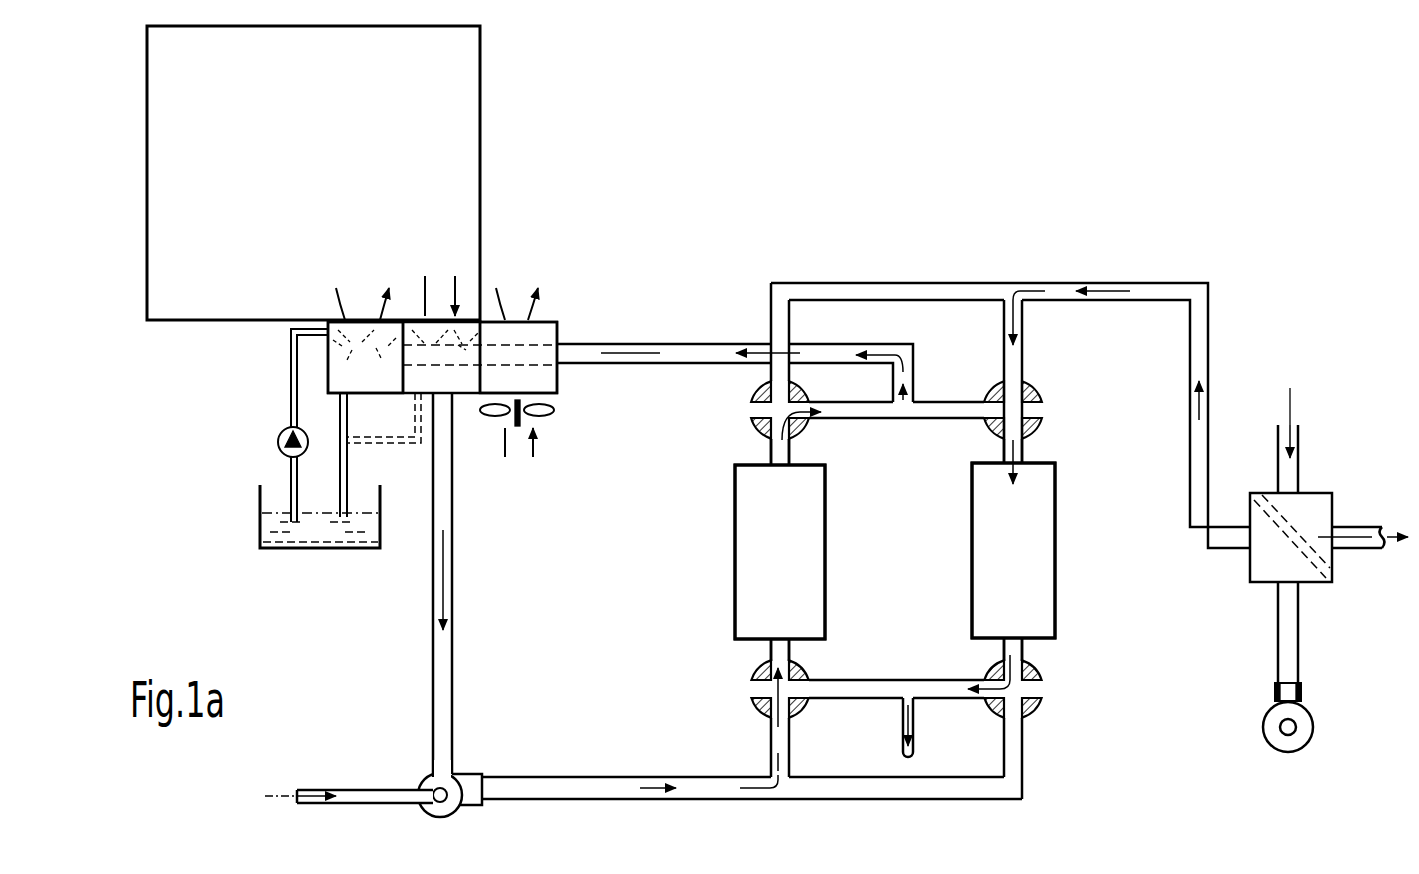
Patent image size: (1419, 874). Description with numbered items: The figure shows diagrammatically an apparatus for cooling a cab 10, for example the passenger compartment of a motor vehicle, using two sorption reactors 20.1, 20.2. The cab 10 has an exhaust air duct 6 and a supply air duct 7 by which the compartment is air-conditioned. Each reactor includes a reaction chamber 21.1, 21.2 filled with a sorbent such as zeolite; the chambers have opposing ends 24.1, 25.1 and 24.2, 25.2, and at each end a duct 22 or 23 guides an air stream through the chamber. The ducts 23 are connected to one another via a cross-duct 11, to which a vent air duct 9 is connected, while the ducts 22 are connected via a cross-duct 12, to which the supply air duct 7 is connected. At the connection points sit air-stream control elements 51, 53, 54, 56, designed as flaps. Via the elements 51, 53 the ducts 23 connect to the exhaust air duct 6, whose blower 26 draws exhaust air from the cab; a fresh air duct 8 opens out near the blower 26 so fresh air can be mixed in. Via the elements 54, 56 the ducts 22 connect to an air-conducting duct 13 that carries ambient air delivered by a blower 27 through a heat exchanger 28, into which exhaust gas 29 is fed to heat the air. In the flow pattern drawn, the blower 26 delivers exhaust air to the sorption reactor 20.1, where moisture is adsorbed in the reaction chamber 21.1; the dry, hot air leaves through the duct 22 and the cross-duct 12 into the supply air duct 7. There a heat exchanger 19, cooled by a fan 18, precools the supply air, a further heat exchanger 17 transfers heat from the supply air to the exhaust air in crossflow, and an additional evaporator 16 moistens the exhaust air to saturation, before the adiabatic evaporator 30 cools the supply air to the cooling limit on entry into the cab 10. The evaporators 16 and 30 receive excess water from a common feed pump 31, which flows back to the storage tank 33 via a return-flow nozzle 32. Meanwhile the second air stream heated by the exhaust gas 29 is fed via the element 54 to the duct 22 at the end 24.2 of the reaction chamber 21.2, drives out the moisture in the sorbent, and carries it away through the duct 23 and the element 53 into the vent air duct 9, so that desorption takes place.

The exhaust air duct 6 is at (438, 684).
The supply air duct 7 is at (652, 344).
The fresh air duct 8 is at (363, 803).
The vent air duct 9 is at (915, 738).
The cab 10 is at (311, 182).
The cross-duct 11 is at (853, 682).
The cross-duct 12 is at (838, 405).
The air-conducting duct 13 is at (1056, 285).
The evaporator 16 is at (462, 338).
The heat exchanger 17 is at (459, 396).
The fan 18 is at (545, 418).
The heat exchanger 19 is at (552, 383).
The sorption reactor 20.1 is at (731, 505).
The sorption reactor 20.2 is at (1061, 496).
The reaction chamber 21.1 is at (735, 607).
The reaction chamber 21.2 is at (1055, 600).
The duct 22 is at (791, 464).
The duct 23 is at (771, 651).
The end 24.1 is at (746, 463).
The end 24.2 is at (1046, 461).
The end 25.1 is at (750, 643).
The end 25.2 is at (1043, 645).
The blower 26 is at (446, 812).
The blower 27 is at (1305, 720).
The heat exchanger 28 is at (1330, 568).
The exhaust gas 29 is at (1292, 400).
The evaporator 30 is at (356, 389).
The feed pump 31 is at (279, 442).
The return-flow nozzle 32 is at (348, 466).
The storage tank 33 is at (258, 524).
The air-stream control element 51 is at (752, 706).
The air-stream control element 53 is at (1043, 692).
The air-stream control element 54 is at (1040, 395).
The air-stream control element 56 is at (750, 410).